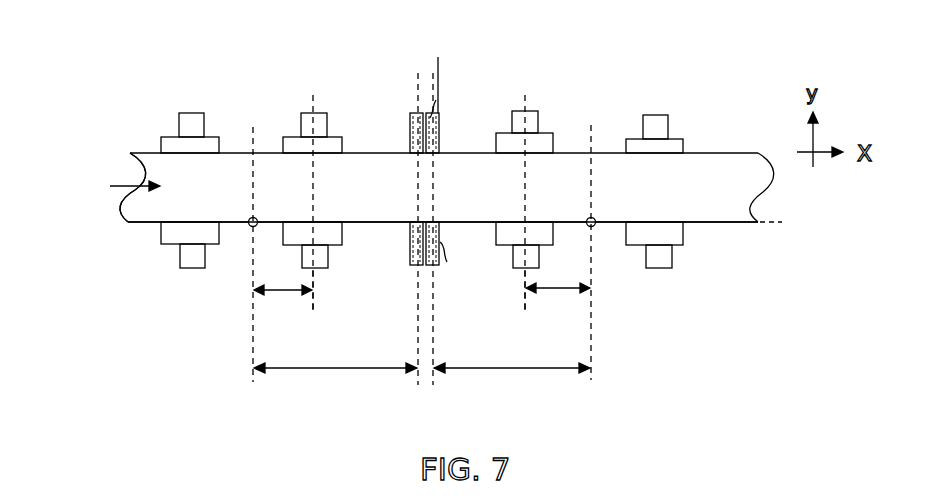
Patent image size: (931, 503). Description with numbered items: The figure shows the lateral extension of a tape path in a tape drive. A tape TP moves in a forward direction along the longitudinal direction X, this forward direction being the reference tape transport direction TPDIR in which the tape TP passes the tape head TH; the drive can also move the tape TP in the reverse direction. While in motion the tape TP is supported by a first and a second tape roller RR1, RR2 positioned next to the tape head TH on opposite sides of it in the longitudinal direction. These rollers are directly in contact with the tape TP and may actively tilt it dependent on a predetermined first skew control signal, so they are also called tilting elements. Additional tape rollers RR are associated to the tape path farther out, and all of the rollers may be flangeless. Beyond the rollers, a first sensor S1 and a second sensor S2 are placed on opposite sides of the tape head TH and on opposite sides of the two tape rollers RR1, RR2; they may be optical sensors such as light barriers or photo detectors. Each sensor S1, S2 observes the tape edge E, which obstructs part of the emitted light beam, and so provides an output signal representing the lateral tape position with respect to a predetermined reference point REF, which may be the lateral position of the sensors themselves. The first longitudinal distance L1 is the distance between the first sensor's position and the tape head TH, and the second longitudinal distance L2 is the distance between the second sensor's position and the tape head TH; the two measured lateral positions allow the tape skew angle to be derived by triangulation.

The tape TP is at (150, 155).
The tape edge E is at (135, 225).
The tape roller RR is at (192, 118).
The first tape roller RR1 is at (320, 122).
The second tape roller RR2 is at (533, 115).
The tape head TH is at (410, 277).
The first sensor S1 is at (250, 228).
The second sensor S2 is at (595, 226).
The reference tape transport direction TPDIR is at (89, 185).
The predetermined reference point REF is at (485, 224).
The first longitudinal distance L1 is at (335, 386).
The second longitudinal distance L2 is at (512, 386).